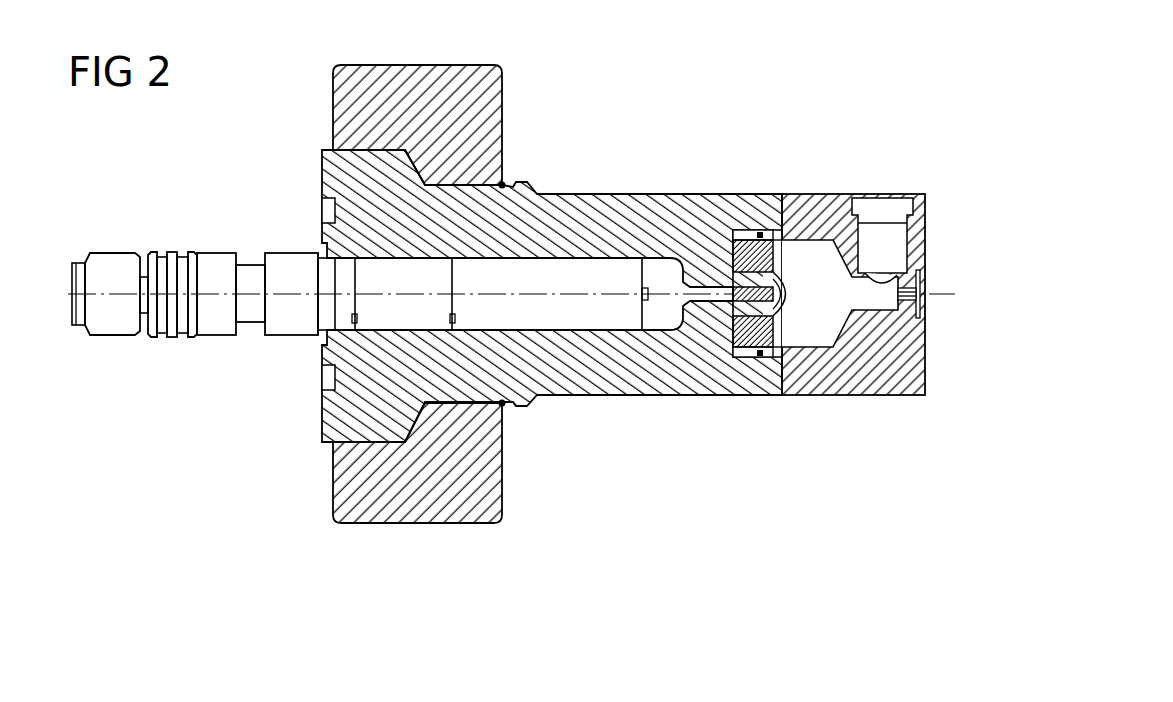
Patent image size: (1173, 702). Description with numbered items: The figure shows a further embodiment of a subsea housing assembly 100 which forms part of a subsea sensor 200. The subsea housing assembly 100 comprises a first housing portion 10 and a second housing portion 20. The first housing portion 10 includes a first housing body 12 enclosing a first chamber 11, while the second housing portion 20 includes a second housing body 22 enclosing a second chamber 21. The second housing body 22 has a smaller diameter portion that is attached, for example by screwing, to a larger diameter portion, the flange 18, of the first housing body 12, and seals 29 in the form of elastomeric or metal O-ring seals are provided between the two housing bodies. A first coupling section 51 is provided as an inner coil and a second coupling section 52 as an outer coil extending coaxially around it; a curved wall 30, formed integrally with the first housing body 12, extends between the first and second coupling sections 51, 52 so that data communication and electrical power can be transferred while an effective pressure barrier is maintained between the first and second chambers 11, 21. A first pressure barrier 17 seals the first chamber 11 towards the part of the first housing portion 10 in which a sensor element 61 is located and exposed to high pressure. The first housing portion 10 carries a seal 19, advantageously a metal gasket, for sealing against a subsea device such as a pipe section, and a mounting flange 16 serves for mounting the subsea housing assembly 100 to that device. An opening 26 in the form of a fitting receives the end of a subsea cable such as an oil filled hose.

The first housing portion 10 is at (534, 329).
The first chamber 11 is at (592, 320).
The first housing body 12 is at (627, 194).
The mounting flange 16 is at (430, 525).
The first pressure barrier 17 is at (372, 302).
The flange 18 is at (760, 240).
The seal 19 is at (322, 210).
The second housing portion 20 is at (863, 329).
The second chamber 21 is at (888, 275).
The second housing body 22 is at (927, 358).
The opening 26 is at (896, 255).
The seals 29 is at (771, 362).
The wall 30 is at (789, 302).
The first coupling section 51 is at (788, 289).
The second coupling section 52 is at (742, 232).
The sensor element 61 is at (113, 263).
The subsea housing assembly 100 is at (628, 329).
The subsea sensor 200 is at (195, 394).